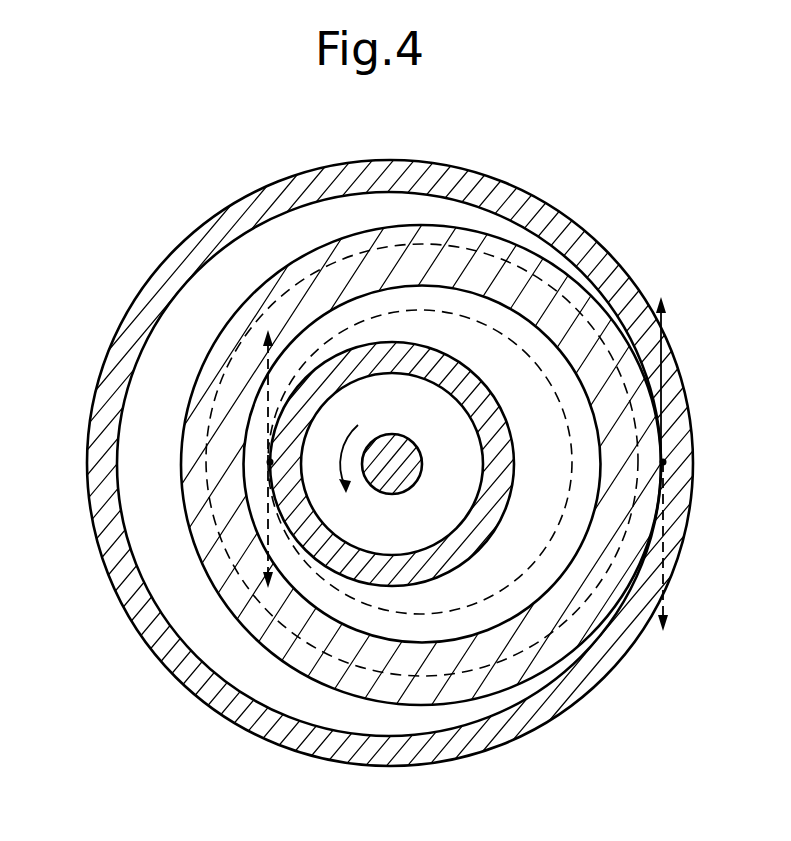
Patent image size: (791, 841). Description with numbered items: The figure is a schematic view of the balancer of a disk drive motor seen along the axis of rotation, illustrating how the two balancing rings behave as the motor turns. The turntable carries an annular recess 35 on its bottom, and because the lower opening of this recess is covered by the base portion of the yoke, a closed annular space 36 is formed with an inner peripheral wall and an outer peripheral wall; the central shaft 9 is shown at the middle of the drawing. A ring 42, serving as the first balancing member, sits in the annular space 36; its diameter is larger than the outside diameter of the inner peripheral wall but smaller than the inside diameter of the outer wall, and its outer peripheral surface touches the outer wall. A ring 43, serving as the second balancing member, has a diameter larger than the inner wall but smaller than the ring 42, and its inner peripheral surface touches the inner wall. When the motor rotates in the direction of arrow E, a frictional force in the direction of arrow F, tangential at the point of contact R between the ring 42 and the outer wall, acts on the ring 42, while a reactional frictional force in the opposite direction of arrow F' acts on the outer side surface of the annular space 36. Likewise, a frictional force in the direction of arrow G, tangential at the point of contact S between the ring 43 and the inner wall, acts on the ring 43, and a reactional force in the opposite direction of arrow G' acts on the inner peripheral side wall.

The annular recess 35 is at (120, 436).
The annular space 36 is at (193, 278).
The ring 42 is at (279, 269).
The ring 43 is at (540, 280).
The shaft 9 is at (418, 465).
The direction of motor rotation E is at (346, 474).
The direction of frictional force on ring 43 G is at (220, 474).
The direction of reactional frictional force on inner wall G' is at (219, 361).
The point of contact of ring 43 S is at (270, 462).
The direction of frictional force on ring 42 F is at (656, 360).
The direction of reactional frictional force on outer wall F' is at (668, 567).
The point of contact of ring 42 R is at (663, 462).